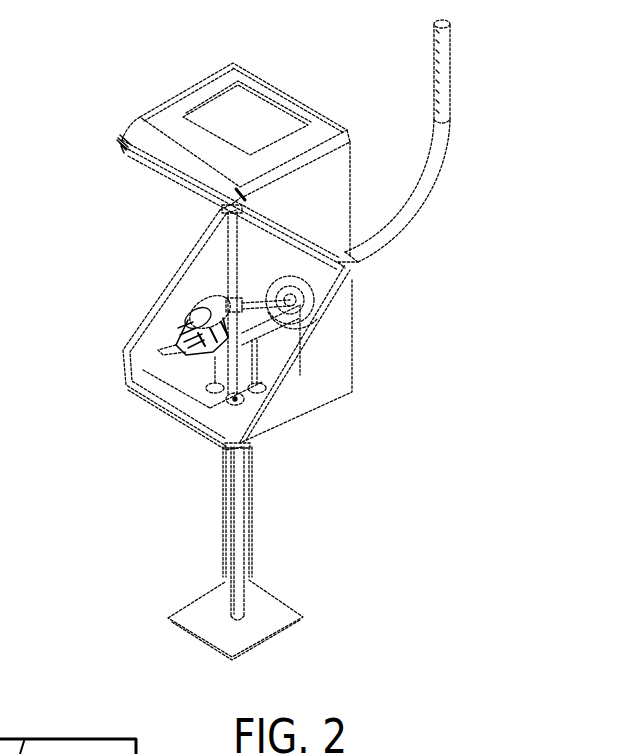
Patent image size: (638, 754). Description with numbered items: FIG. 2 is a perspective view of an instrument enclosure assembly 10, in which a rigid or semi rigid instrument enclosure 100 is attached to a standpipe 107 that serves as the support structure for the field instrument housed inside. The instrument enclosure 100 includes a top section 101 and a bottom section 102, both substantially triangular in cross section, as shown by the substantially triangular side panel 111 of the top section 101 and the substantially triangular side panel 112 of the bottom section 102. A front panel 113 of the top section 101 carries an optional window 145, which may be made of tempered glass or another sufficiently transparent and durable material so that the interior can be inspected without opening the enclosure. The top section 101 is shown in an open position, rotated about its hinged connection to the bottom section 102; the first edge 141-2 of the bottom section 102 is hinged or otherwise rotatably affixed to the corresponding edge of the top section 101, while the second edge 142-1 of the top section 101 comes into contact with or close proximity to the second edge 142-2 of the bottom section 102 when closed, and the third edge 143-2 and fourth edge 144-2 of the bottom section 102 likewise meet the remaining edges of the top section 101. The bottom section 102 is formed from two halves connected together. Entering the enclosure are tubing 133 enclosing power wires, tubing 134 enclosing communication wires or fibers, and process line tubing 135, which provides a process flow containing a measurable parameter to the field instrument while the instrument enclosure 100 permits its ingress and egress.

The instrument enclosure assembly 10 is at (363, 643).
The instrument enclosure 100 is at (78, 246).
The top section 101 is at (222, 155).
The bottom section 102 is at (268, 305).
The standpipe 107 is at (242, 574).
The side panel of top section 111 is at (332, 194).
The side panel of bottom section 112 is at (332, 395).
The front panel 113 is at (166, 107).
The tubing enclosing power wires 133 is at (218, 503).
The tubing enclosing communication wires or fibers 134 is at (246, 506).
The process line tubing 135 is at (436, 63).
The first edge of bottom section 141-2 is at (278, 222).
The second edge of top section 142-1 is at (166, 160).
The second edge of bottom section 142-2 is at (168, 414).
The third edge of bottom section 143-2 is at (180, 272).
The fourth edge of bottom section 144-2 is at (323, 313).
The window 145 is at (198, 124).